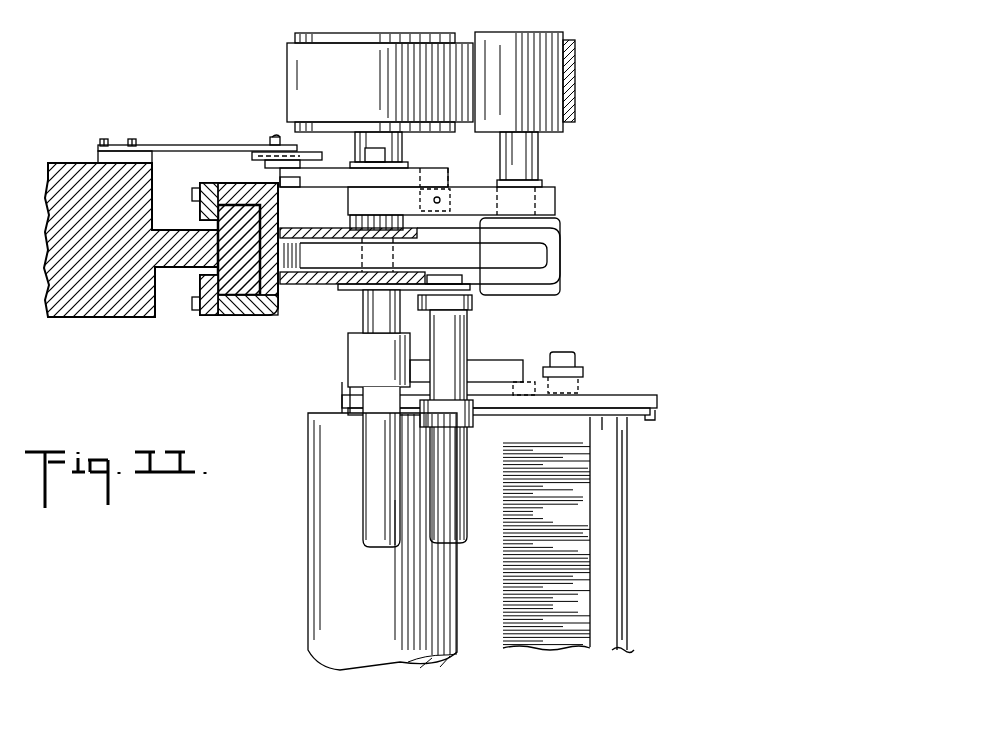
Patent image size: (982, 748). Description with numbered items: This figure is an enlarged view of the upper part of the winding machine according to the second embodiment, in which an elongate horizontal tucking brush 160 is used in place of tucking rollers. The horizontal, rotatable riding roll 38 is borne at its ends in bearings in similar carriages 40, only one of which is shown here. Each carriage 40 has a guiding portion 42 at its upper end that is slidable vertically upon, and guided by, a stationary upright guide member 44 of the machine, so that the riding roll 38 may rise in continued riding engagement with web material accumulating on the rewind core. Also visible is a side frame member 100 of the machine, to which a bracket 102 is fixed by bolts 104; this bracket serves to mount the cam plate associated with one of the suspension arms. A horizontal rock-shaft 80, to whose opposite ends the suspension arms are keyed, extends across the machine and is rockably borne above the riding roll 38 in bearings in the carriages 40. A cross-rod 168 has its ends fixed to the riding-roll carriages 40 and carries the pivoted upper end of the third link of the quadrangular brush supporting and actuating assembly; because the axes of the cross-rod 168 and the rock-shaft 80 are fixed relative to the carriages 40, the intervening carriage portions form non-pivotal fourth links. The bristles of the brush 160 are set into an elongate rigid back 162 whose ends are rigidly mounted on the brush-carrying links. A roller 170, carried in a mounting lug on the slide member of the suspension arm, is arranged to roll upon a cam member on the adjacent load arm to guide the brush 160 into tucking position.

The side frame member 100 is at (76, 166).
The bracket 102 is at (236, 144).
The bolts 104 is at (131, 138).
The stationary upright guide members 44 is at (252, 216).
The guiding portions 42 is at (228, 312).
The carriages 40 is at (298, 285).
The cross-rod 168 is at (455, 332).
The roller 170 is at (533, 374).
The rock-shaft 80 is at (375, 441).
The riding roll 38 is at (322, 535).
The rigid back 162 is at (610, 527).
The tucking brush 160 is at (530, 637).